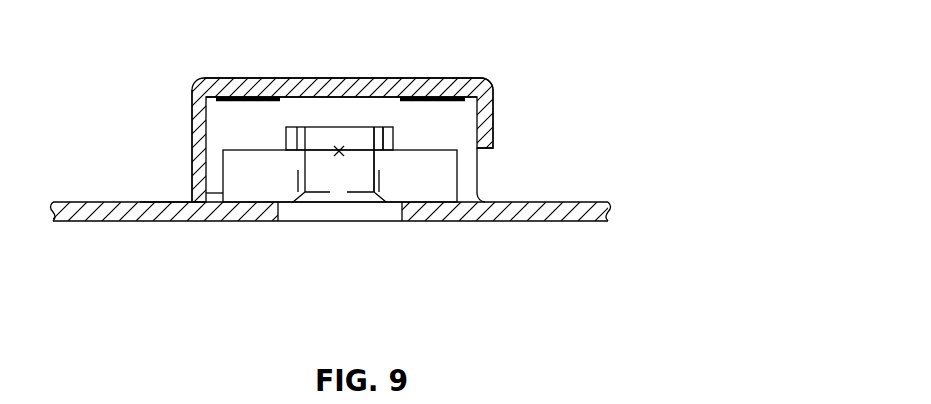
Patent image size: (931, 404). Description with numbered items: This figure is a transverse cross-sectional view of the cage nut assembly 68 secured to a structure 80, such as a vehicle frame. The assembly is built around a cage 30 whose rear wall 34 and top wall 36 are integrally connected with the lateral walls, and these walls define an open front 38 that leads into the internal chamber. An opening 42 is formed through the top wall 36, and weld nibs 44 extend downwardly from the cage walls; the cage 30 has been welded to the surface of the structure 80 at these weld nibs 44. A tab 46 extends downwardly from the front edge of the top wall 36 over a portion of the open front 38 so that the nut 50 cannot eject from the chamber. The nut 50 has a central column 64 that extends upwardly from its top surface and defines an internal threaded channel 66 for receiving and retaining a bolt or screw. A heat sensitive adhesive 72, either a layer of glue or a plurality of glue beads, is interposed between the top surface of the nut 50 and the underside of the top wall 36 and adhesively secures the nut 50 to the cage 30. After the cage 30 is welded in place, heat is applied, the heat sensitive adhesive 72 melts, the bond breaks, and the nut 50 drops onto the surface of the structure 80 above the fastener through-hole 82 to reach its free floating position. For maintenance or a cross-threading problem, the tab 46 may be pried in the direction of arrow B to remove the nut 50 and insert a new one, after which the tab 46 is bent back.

The cage 30 is at (186, 56).
The rear wall 34 is at (190, 140).
The top wall 36 is at (432, 78).
The open front 38 is at (248, 133).
The opening 42 is at (281, 97).
The weld nibs 44 is at (158, 204).
The tab 46 is at (495, 125).
The nut 50 is at (448, 182).
The central column 64 is at (387, 138).
The threaded channel 66 is at (355, 165).
The cage nut assembly 68 is at (517, 45).
The heat sensitive adhesive 72 is at (215, 105).
The structure 80 is at (68, 224).
The fastener through-hole 82 is at (376, 210).
The arrow B is at (652, 102).